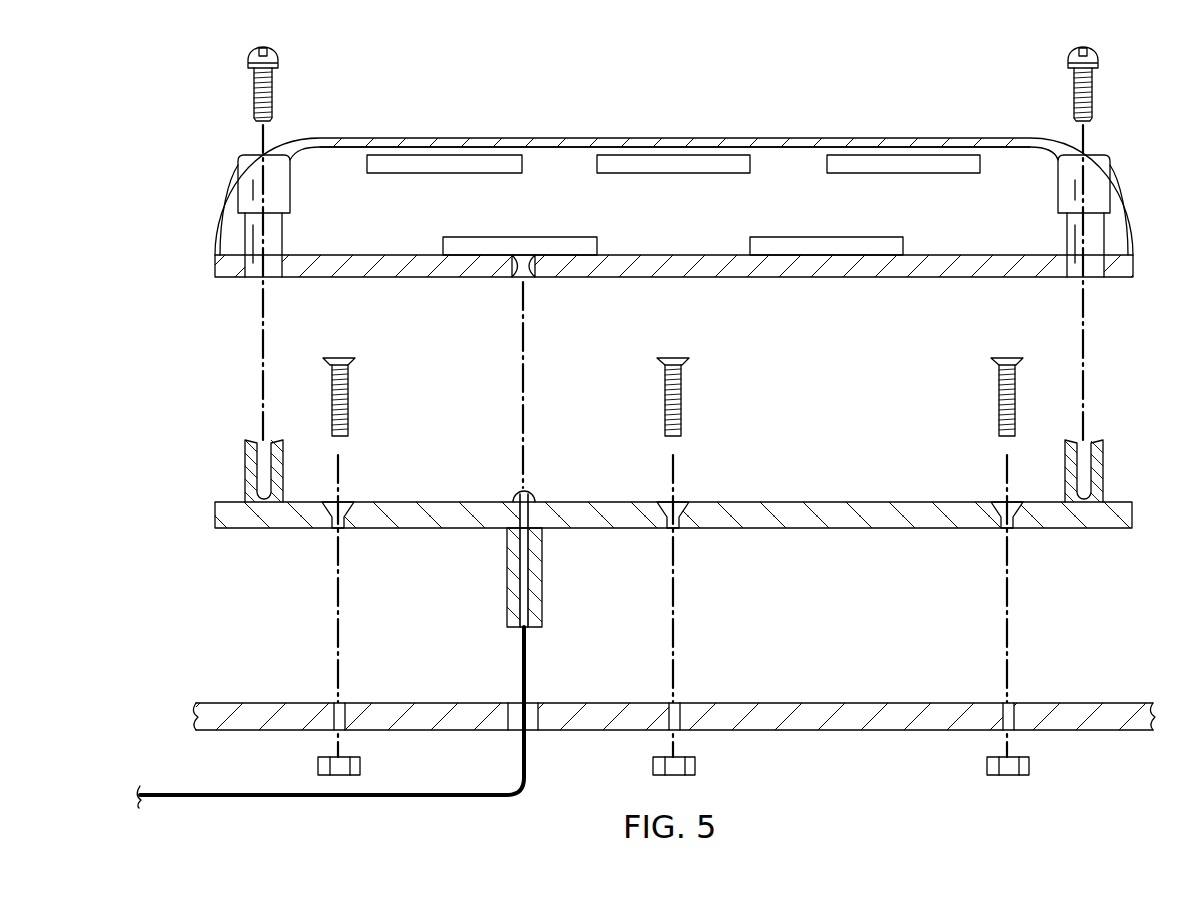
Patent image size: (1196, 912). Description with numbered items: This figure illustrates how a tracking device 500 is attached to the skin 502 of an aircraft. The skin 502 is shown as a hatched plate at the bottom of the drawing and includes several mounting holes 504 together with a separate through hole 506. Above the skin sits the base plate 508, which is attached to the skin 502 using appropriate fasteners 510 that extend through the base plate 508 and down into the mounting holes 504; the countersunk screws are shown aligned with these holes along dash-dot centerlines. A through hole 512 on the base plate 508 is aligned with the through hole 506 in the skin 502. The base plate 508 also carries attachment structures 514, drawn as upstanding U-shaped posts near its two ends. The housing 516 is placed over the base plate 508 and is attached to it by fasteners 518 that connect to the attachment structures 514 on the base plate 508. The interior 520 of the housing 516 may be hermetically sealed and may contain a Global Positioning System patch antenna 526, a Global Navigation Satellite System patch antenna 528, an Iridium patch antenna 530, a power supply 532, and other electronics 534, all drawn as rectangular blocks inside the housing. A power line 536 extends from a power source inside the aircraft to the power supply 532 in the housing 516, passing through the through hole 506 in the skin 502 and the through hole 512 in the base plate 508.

The tracking device 500 is at (456, 64).
The skin 502 is at (880, 722).
The mounting holes 504 is at (336, 702).
The through hole 506 is at (536, 708).
The base plate 508 is at (790, 529).
The fasteners 510 is at (328, 357).
The through hole 512 is at (516, 629).
The attachment structures 514 is at (242, 468).
The housing 516 is at (793, 136).
The fasteners 518 is at (248, 52).
The interior 520 is at (1025, 227).
The Global Positioning System patch antenna 526 is at (446, 175).
The Global Navigation Satellite System patch antenna 528 is at (673, 175).
The Iridium patch antenna 530 is at (905, 175).
The power supply 532 is at (521, 236).
The other electronics 534 is at (830, 236).
The power line 536 is at (253, 798).